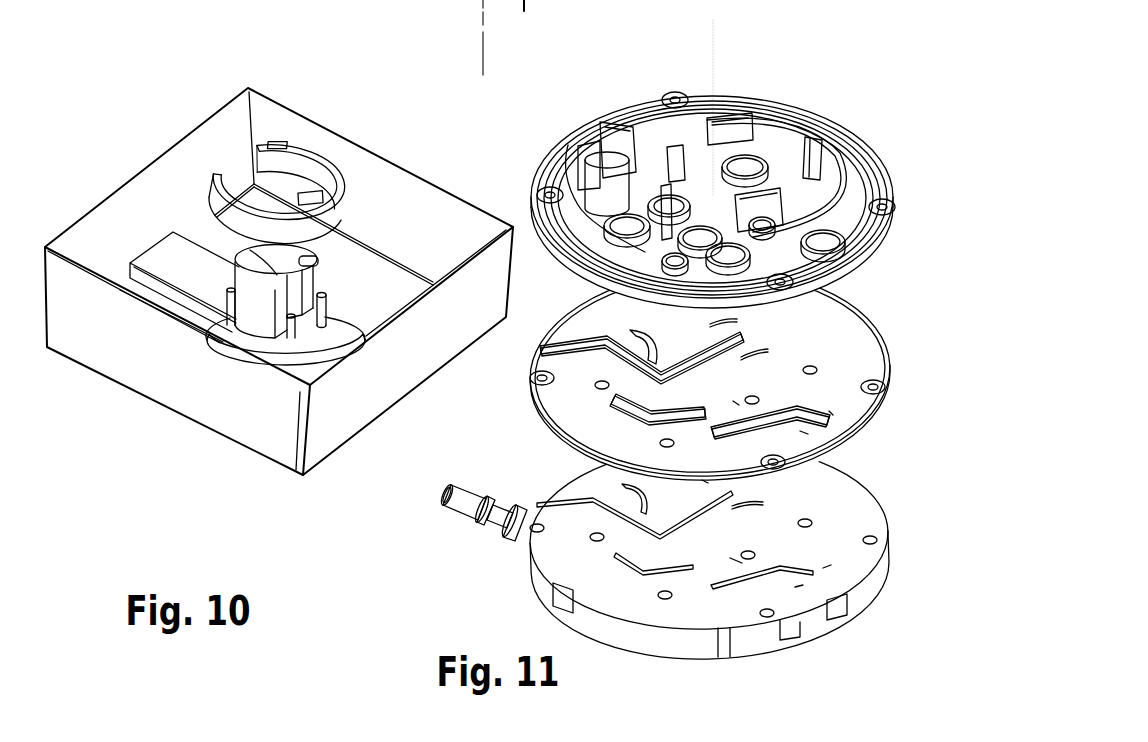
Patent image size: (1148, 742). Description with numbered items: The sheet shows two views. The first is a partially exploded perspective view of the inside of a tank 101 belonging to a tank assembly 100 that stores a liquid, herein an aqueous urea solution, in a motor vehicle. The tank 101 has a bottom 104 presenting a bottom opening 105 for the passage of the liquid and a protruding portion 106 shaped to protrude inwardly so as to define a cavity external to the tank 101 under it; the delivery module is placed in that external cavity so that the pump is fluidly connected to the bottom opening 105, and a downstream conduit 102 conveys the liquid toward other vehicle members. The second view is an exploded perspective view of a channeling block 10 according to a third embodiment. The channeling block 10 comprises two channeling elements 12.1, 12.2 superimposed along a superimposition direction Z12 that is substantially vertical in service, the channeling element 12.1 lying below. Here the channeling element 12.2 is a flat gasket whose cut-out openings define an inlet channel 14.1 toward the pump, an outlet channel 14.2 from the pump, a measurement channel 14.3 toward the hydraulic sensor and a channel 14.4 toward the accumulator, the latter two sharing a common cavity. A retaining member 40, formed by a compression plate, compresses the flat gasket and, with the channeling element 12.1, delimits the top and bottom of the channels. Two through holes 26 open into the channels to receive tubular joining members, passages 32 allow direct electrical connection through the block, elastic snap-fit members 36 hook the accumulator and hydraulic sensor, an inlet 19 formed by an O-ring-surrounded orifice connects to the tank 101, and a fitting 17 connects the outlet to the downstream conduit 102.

In FIG. 10, the tank assembly 100 is at (177, 453).
In FIG. 10, the tank 101 is at (278, 417).
In FIG. 10, the downstream conduit 102 is at (277, 125).
In FIG. 10, the bottom 104 is at (377, 270).
In FIG. 10, the bottom opening 105 is at (340, 318).
In FIG. 10, the protruding portion 106 is at (257, 318).
In FIG. 11, the channeling block 10 is at (908, 105).
In FIG. 11, the superimposition direction Z12 is at (740, 107).
In FIG. 11, the elastic snap-fit members 36 is at (636, 174).
In FIG. 11, the through holes 26 is at (730, 243).
In FIG. 11, the passages 32 is at (758, 238).
In FIG. 11, the retaining member 40 is at (778, 152).
In FIG. 11, the inlet 19 is at (832, 228).
In FIG. 11, the channeling element 12.2 is at (578, 418).
In FIG. 11, the measurement channel 14.3 is at (597, 340).
In FIG. 11, the channel 14.4 is at (746, 337).
In FIG. 11, the outlet channel 14.2 is at (673, 410).
In FIG. 11, the inlet channel 14.1 is at (795, 408).
In FIG. 11, the channeling element 12.1 is at (542, 565).
In FIG. 11, the fitting 17 is at (462, 502).